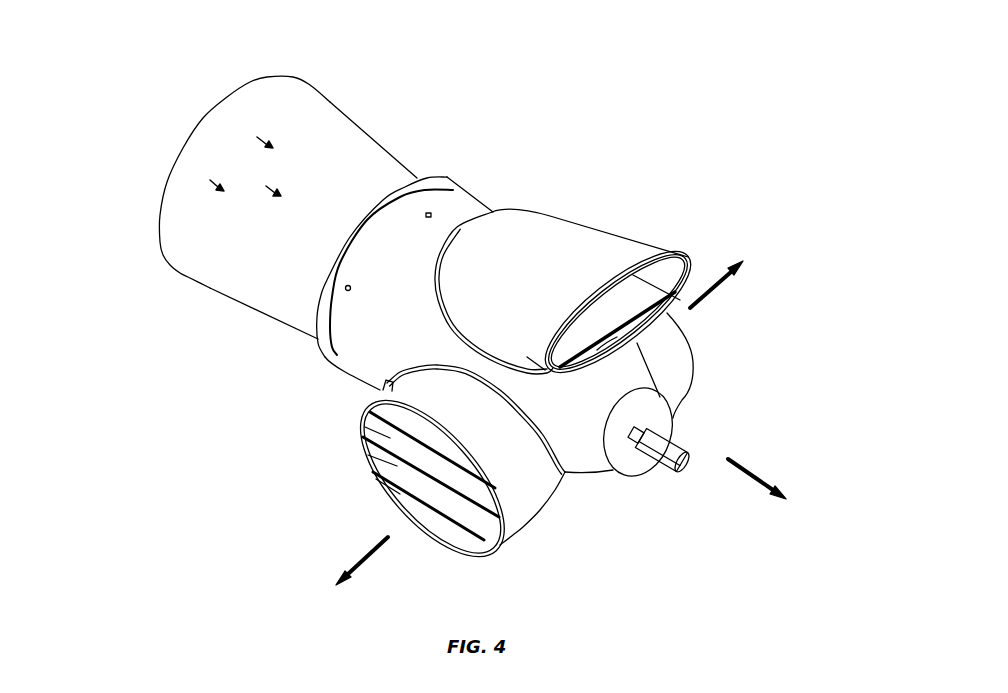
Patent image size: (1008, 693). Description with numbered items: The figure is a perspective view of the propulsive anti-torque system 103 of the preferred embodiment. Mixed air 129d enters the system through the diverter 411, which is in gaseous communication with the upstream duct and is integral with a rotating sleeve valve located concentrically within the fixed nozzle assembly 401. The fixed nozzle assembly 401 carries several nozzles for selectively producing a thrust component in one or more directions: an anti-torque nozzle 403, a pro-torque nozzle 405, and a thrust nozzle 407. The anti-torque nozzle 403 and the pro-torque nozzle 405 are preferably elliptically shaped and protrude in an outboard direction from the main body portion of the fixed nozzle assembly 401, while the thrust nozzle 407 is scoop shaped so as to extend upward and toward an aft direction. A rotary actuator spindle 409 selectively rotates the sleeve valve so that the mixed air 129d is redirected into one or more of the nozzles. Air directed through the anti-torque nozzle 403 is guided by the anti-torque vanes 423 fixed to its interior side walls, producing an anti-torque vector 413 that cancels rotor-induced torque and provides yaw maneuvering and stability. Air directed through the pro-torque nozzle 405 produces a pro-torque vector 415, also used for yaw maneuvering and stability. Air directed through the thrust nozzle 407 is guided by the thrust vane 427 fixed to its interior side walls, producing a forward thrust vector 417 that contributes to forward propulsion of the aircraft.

The propulsive anti-torque system 103 is at (608, 106).
The fixed nozzle assembly 401 is at (456, 167).
The anti-torque nozzle 403 is at (518, 532).
The pro-torque nozzle 405 is at (690, 363).
The thrust nozzle 407 is at (642, 243).
The rotary actuator spindle 409 is at (687, 467).
The diverter 411 is at (201, 283).
The anti-torque vector 413 is at (372, 541).
The pro-torque vector 415 is at (717, 283).
The forward thrust vector 417 is at (748, 470).
The anti-torque vanes 423 is at (367, 470).
The thrust vane 427 is at (615, 337).
The mixed air 129d is at (212, 184).